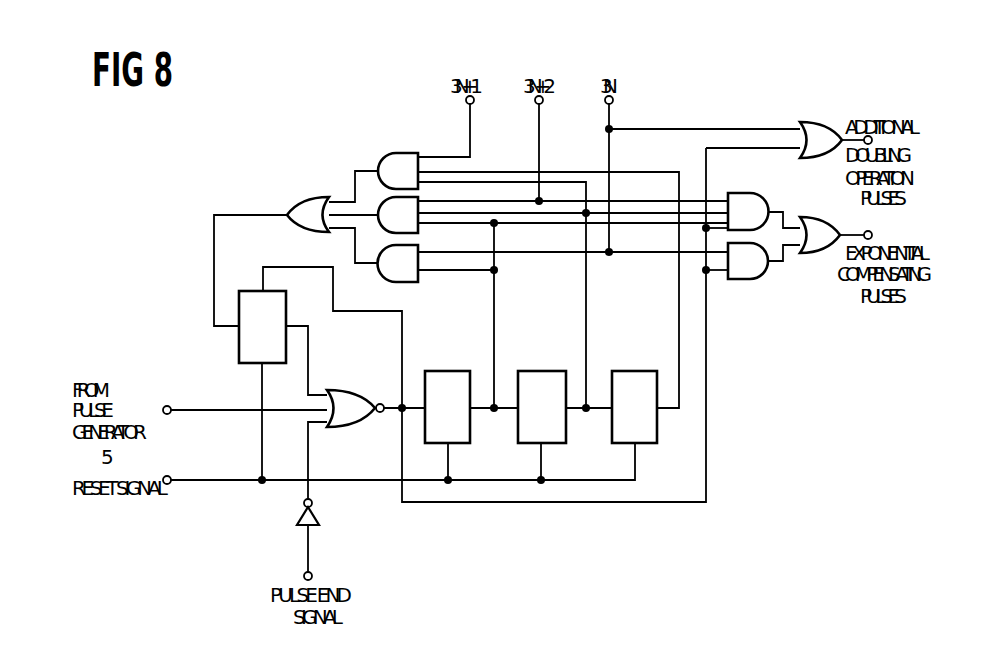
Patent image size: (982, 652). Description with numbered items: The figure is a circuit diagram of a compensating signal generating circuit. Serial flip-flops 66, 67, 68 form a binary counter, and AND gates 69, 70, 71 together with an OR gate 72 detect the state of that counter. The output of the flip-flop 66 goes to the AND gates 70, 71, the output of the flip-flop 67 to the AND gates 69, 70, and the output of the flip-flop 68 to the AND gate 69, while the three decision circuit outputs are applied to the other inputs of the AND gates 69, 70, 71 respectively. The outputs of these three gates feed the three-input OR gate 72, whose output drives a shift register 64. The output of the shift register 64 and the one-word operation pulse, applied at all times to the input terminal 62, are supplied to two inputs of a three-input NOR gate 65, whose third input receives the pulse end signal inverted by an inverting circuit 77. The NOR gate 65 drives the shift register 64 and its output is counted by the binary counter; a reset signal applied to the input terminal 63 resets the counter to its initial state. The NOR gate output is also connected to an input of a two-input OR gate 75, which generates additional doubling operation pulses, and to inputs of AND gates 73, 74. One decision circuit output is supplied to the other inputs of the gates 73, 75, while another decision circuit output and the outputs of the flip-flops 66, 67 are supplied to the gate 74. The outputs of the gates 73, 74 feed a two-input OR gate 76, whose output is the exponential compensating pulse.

The input terminal 62 is at (165, 406).
The input terminal 63 is at (165, 476).
The shift register 64 is at (253, 291).
The NOR gate 65 is at (349, 391).
The flip-flop 66 is at (443, 371).
The flip-flop 67 is at (539, 371).
The flip-flop 68 is at (632, 371).
The AND gate 69 is at (381, 155).
The AND gate 70 is at (382, 201).
The AND gate 71 is at (382, 250).
The OR gate 72 is at (303, 198).
The AND gate 73 is at (761, 280).
The AND gate 74 is at (760, 194).
The OR gate 75 is at (818, 122).
The OR gate 76 is at (818, 217).
The inverting circuit 77 is at (318, 511).